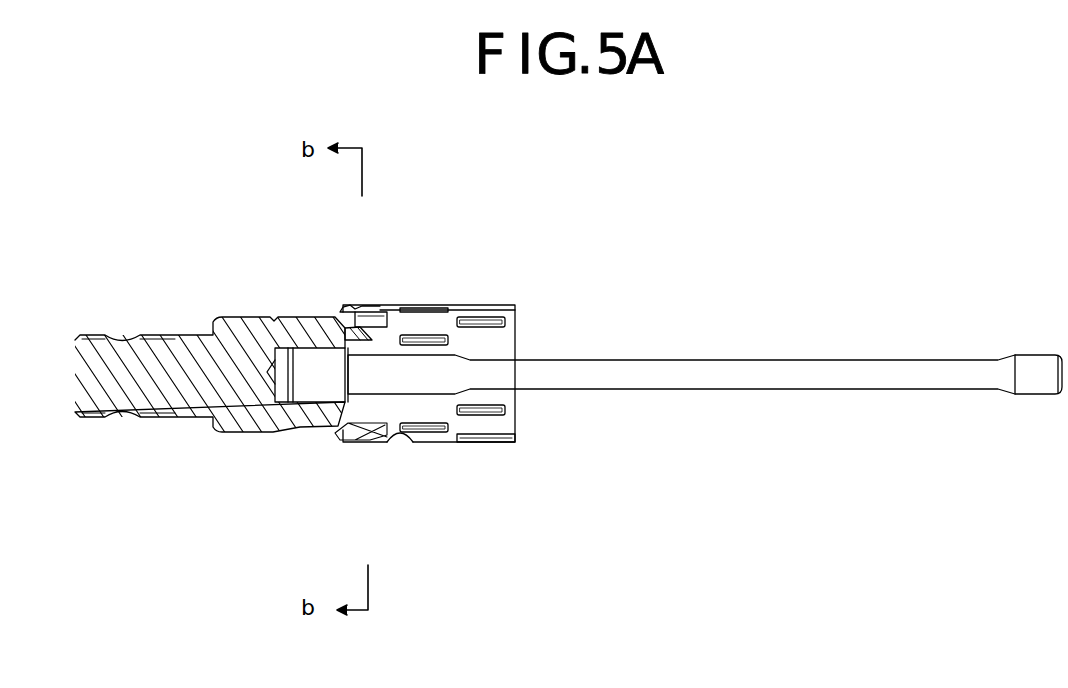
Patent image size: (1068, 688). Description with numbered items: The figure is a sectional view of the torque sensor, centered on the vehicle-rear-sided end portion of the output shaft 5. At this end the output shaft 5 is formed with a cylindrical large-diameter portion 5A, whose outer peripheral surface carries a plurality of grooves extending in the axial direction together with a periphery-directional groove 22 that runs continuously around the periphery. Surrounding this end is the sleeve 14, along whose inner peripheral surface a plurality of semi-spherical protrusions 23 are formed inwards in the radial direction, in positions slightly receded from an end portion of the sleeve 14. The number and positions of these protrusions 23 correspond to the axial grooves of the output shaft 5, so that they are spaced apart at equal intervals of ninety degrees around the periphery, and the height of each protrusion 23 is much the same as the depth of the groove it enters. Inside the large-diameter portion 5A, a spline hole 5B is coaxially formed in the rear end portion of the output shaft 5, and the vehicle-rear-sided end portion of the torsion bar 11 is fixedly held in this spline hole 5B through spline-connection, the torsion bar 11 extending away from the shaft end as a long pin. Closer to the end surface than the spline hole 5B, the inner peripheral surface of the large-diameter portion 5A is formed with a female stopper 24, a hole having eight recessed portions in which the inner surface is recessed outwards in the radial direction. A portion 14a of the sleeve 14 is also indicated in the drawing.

The output shaft 5 is at (110, 388).
The large-diameter portion 5A is at (345, 307).
The spline hole 5B is at (322, 405).
The torsion bar 11 is at (769, 377).
The sleeve 14 is at (455, 445).
The housing projection 14a is at (356, 442).
The periphery-directional groove 22 is at (350, 442).
The semi-spherical protrusions 23 is at (415, 442).
The female stopper 24 is at (363, 340).